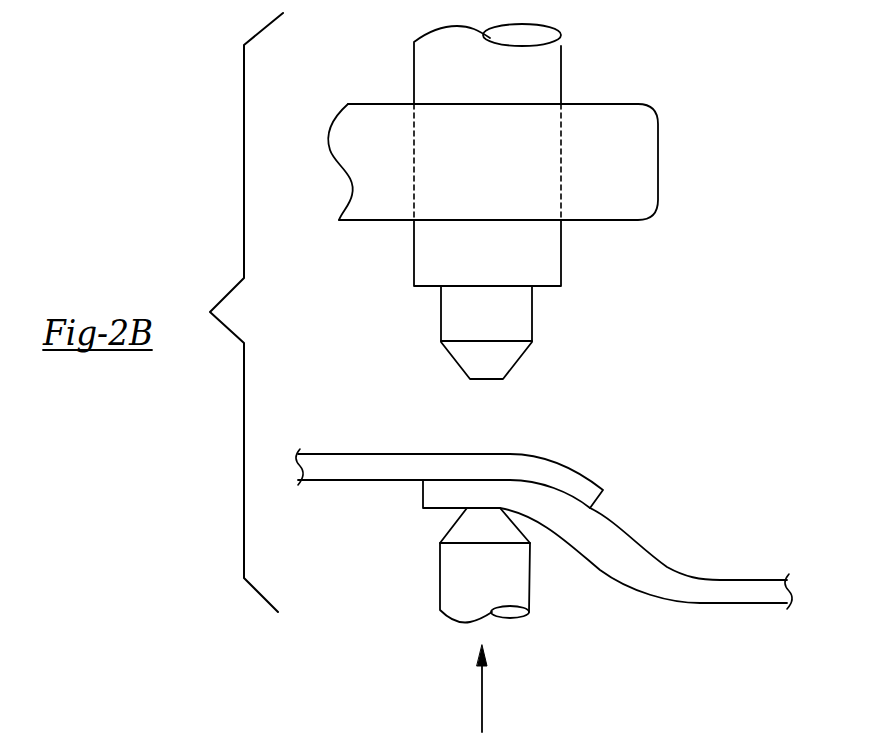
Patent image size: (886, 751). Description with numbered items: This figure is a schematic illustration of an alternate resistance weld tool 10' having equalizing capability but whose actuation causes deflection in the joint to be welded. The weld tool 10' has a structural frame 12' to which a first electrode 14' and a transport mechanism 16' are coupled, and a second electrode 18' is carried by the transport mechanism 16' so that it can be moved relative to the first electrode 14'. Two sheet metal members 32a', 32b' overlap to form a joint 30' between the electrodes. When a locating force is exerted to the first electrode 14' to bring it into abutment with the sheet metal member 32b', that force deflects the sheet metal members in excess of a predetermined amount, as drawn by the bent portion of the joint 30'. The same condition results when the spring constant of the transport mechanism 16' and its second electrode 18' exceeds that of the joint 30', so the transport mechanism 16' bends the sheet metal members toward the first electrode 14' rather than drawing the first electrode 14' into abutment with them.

The weld tool 10' is at (418, 645).
The structural frame 12' is at (475, 130).
The first electrode 14' is at (551, 591).
The transport mechanism 16' is at (560, 155).
The second electrode 18' is at (569, 332).
The joint 30' is at (567, 506).
The sheet metal member 32a' is at (449, 447).
The sheet metal member 32b' is at (705, 602).